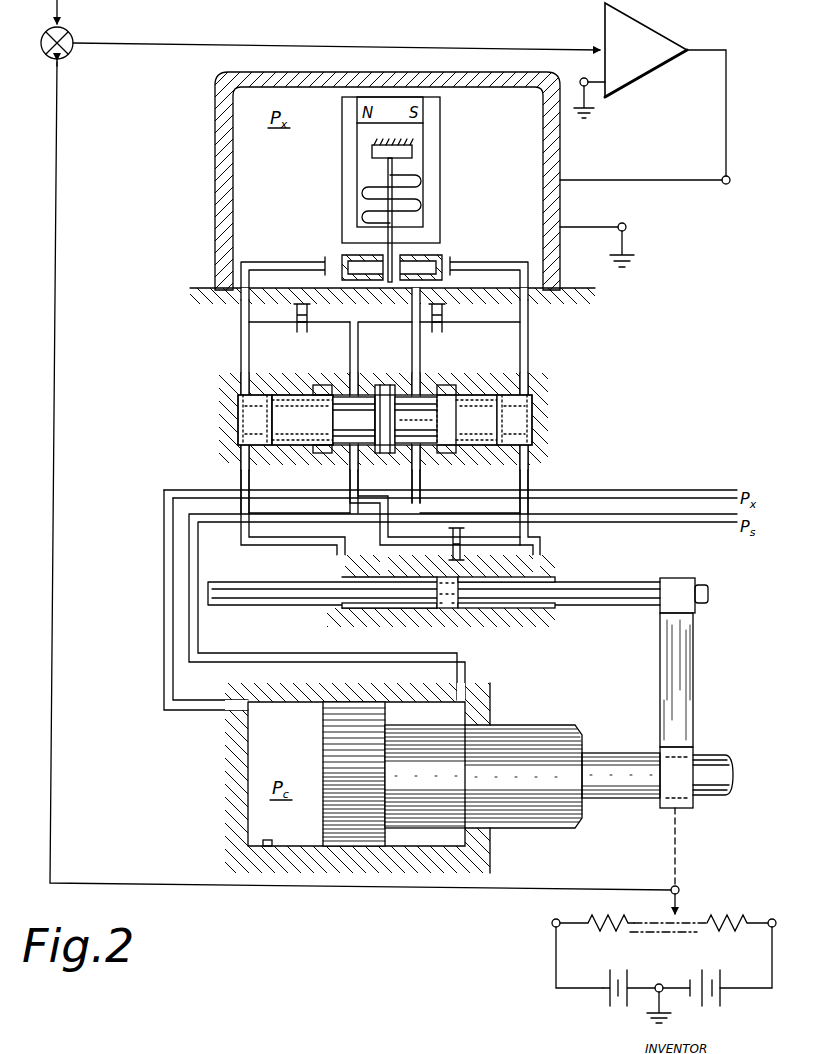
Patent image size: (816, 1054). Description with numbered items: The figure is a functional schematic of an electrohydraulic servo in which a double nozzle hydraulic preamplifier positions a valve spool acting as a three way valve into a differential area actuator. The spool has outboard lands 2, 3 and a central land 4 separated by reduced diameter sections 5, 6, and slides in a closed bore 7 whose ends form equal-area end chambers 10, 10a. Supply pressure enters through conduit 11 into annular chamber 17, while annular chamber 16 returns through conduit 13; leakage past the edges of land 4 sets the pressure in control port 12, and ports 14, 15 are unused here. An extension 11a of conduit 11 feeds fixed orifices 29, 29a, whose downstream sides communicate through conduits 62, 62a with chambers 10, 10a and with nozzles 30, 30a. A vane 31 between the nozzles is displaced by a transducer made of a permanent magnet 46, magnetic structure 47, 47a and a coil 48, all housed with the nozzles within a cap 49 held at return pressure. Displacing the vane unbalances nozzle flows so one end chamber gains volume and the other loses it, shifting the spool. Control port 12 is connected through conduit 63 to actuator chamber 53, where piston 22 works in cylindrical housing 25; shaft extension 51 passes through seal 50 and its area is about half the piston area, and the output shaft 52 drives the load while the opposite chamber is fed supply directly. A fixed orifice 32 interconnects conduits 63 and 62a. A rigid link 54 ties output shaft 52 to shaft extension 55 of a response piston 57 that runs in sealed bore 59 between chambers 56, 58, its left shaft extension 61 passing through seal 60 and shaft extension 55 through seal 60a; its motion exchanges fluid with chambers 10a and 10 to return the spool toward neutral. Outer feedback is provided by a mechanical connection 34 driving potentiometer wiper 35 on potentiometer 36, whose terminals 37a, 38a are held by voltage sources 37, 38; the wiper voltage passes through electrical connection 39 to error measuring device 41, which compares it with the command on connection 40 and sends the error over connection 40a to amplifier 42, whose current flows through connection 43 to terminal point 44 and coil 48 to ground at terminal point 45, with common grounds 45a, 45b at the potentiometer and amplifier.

The outboard land 2 is at (478, 448).
The outboard land 3 is at (300, 392).
The central land 4 is at (376, 386).
The reduced diameter section 5 is at (418, 445).
The reduced diameter section 6 is at (358, 445).
The bore 7 is at (258, 450).
The end chamber 10 is at (230, 412).
The end chamber 10a is at (545, 424).
The conduit 11 is at (682, 530).
The conduit extension 11a is at (376, 322).
The control port 12 is at (385, 386).
The conduit 13 is at (420, 359).
The port 14 is at (448, 455).
The port 15 is at (326, 385).
The annular chamber 16 is at (412, 450).
The annular chamber 17 is at (340, 452).
The piston 22 is at (358, 715).
The cylindrical housing 25 is at (263, 846).
The fixed orifice 29 is at (302, 330).
The fixed orifice 29a is at (445, 334).
The nozzle 30 is at (345, 262).
The nozzle 30a is at (442, 260).
The vane 31 is at (400, 250).
The orifice 32 is at (462, 538).
The mechanical connection 34 is at (683, 854).
The potentiometer wiper 35 is at (682, 896).
The potentiometer 36 is at (630, 930).
The voltage source 37 is at (603, 996).
The potentiometer terminal 37a is at (552, 926).
The voltage source 38 is at (722, 1004).
The potentiometer terminal 38a is at (770, 918).
The electrical connection 39 is at (52, 786).
The electrical connection 40 is at (105, 5).
The connection 40a is at (490, 50).
The error measuring device 41 is at (50, 60).
The amplifier 42 is at (648, 70).
The connection 43 is at (728, 112).
The terminal point 44 is at (732, 185).
The terminal point 45 is at (628, 226).
The common ground connection 45a is at (661, 982).
The common ground connection 45b is at (582, 78).
The permanent magnet 46 is at (430, 120).
The magnetic structure 47 is at (352, 168).
The magnetic structure 47a is at (435, 162).
The coil 48 is at (360, 212).
The cap 49 is at (215, 120).
The fluid tight seal 50 is at (480, 724).
The shaft extension 51 is at (545, 762).
The output shaft 52 is at (608, 780).
The actuator chamber 53 is at (240, 762).
The rigid link 54 is at (680, 693).
The shaft extension 55 is at (605, 585).
The chamber 56 is at (508, 618).
The response piston 57 is at (448, 612).
The chamber 58 is at (384, 610).
The sealed bore 59 is at (352, 612).
The fluid tight seal 60 is at (330, 614).
The fluid tight seal 60a is at (560, 614).
The shaft extension 61 is at (238, 590).
The conduit 62 is at (240, 331).
The conduit 62a is at (530, 348).
The conduit 63 is at (165, 600).